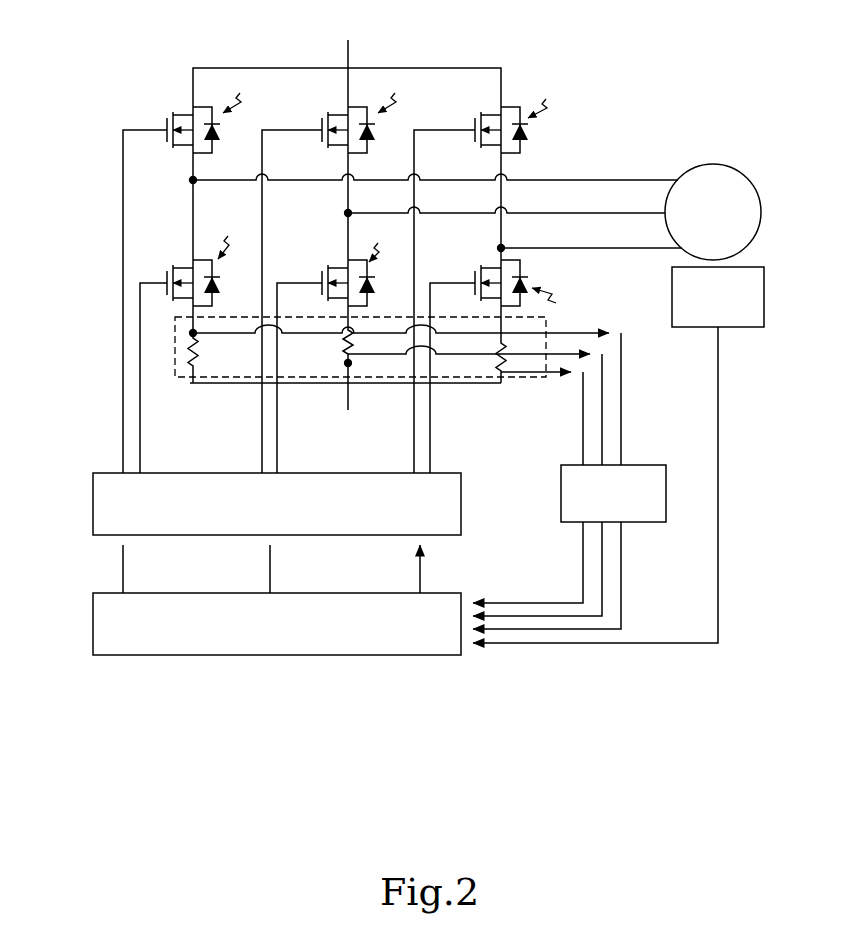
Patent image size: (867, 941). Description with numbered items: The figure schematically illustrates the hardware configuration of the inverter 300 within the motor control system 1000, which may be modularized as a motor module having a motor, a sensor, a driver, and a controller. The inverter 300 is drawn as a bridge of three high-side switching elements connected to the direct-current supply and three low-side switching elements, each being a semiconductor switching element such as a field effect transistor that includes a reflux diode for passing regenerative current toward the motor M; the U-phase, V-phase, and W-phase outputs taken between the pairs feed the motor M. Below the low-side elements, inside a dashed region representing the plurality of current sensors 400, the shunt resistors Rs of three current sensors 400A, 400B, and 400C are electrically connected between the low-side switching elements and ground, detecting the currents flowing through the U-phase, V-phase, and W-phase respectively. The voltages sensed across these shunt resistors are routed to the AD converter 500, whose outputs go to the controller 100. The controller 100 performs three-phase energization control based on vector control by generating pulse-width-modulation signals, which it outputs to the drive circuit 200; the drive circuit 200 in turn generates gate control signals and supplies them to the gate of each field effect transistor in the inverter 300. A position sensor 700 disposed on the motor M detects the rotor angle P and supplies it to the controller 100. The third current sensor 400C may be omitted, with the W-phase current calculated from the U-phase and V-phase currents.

The controller 100 is at (310, 657).
The drive circuit 200 is at (465, 510).
The inverter 300 is at (506, 60).
The current sensors 400 is at (364, 371).
The current sensor 400A is at (186, 364).
The current sensor 400B is at (331, 364).
The current sensor 400C is at (492, 365).
The AD converter 500 is at (644, 527).
The position sensor 700 is at (748, 328).
The motor control system 1000 is at (424, 416).